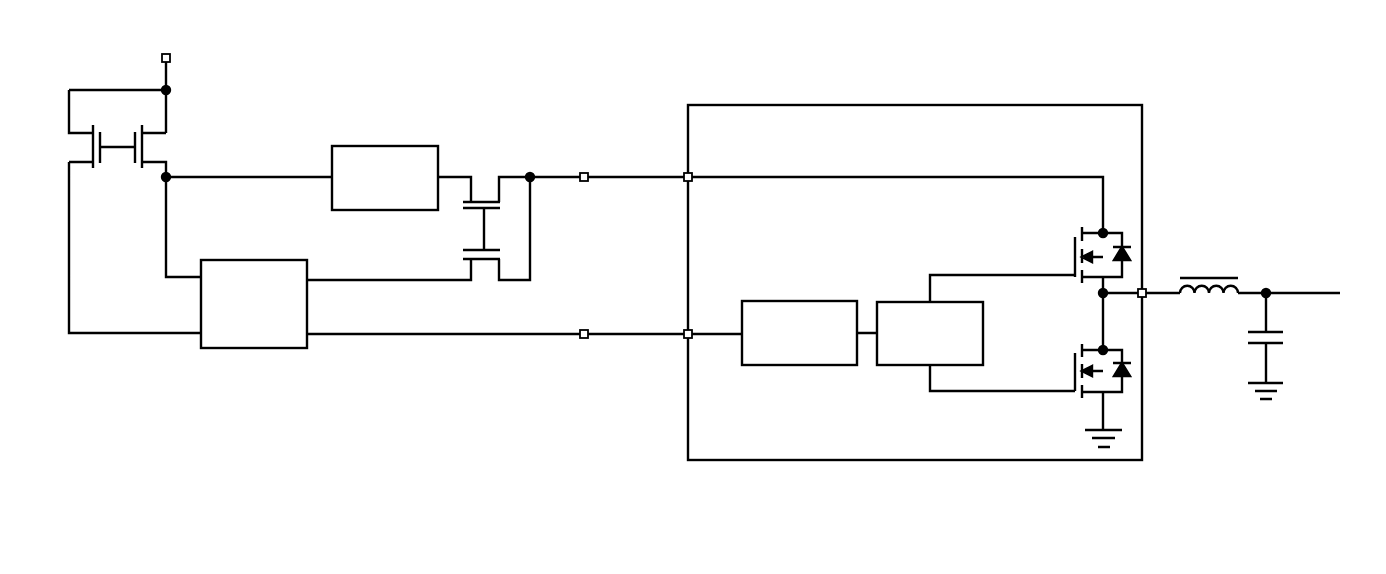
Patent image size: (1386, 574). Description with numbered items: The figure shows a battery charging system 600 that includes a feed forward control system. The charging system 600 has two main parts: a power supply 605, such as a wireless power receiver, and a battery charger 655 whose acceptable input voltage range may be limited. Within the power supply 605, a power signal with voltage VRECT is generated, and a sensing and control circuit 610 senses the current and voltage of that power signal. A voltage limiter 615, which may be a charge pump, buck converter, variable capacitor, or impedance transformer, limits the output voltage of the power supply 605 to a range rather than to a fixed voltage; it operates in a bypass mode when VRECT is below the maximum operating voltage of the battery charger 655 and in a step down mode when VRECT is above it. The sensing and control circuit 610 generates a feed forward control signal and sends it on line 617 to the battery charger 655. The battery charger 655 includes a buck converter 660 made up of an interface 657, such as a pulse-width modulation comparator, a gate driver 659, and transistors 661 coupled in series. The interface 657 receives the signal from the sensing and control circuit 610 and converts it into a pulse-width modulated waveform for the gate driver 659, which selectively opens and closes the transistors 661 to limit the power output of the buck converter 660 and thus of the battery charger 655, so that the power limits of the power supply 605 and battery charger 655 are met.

The battery charging system 600 is at (1300, 108).
The power supply 605 is at (503, 104).
The sensing and control circuit 610 is at (240, 260).
The voltage limiter 615 is at (378, 146).
The line 617 is at (597, 331).
The battery charger 655 is at (1160, 98).
The interface 657 is at (787, 301).
The gate driver 659 is at (907, 366).
The buck converter 660 is at (1133, 216).
The transistors 661 is at (1091, 280).